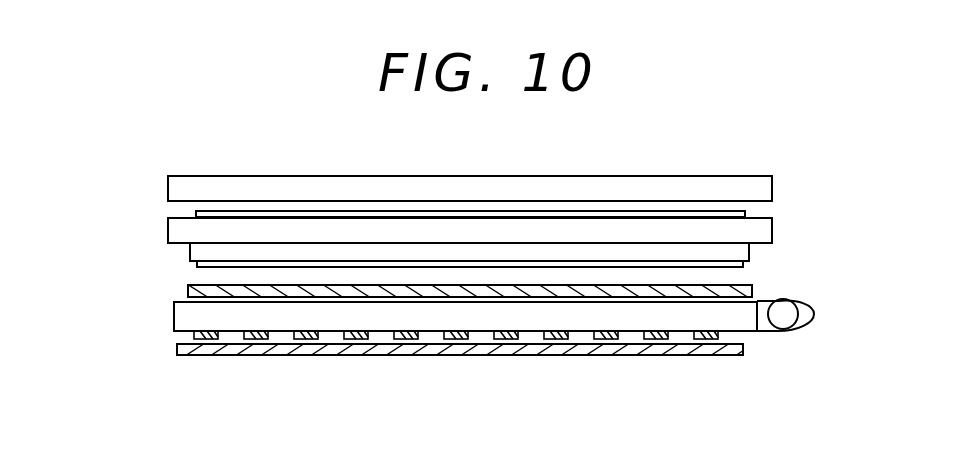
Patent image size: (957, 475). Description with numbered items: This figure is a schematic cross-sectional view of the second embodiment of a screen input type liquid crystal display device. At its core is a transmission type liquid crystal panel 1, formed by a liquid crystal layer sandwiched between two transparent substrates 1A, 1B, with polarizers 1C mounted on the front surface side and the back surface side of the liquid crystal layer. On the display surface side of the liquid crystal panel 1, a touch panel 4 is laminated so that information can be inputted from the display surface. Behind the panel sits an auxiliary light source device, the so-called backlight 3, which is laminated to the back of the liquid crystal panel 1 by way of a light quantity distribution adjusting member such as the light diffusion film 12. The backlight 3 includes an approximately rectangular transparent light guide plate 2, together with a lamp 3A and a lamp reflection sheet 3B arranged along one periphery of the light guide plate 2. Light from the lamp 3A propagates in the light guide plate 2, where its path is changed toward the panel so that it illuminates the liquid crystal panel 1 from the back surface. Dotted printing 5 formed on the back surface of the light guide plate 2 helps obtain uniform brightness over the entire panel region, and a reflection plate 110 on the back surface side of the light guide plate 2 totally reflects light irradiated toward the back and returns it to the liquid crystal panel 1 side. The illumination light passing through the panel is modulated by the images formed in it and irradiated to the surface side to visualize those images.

The transmission type liquid crystal panel 1 is at (794, 234).
The transparent substrate 1A is at (168, 232).
The transparent substrate 1B is at (190, 253).
The polarizers 1C is at (595, 262).
The touch panel 4 is at (743, 176).
The light diffusion film 12 is at (755, 286).
The backlight 3 is at (166, 327).
The light guide plate 2 is at (335, 320).
The lamp 3A is at (793, 322).
The lamp reflection sheet 3B is at (812, 305).
The dotted printing 5 is at (255, 340).
The reflection plate 110 is at (487, 356).